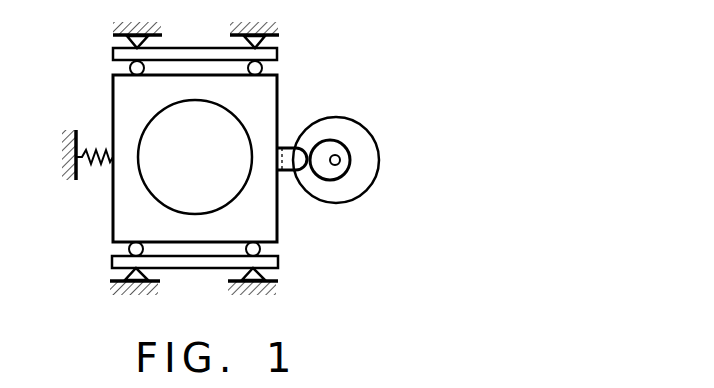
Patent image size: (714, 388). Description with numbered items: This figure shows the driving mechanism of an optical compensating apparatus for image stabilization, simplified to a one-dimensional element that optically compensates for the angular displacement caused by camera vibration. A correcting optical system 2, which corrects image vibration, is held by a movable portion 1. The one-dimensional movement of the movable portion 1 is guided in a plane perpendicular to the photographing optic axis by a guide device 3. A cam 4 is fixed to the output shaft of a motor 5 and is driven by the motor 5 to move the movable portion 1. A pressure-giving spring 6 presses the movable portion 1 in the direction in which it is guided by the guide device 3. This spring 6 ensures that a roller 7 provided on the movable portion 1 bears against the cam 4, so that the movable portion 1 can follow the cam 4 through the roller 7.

The movable portion 1 is at (118, 222).
The correcting optical system 2 is at (195, 157).
The guide device 3 is at (277, 54).
The cam 4 is at (320, 151).
The motor 5 is at (357, 134).
The pressure-giving spring 6 is at (95, 150).
The roller 7 is at (300, 176).